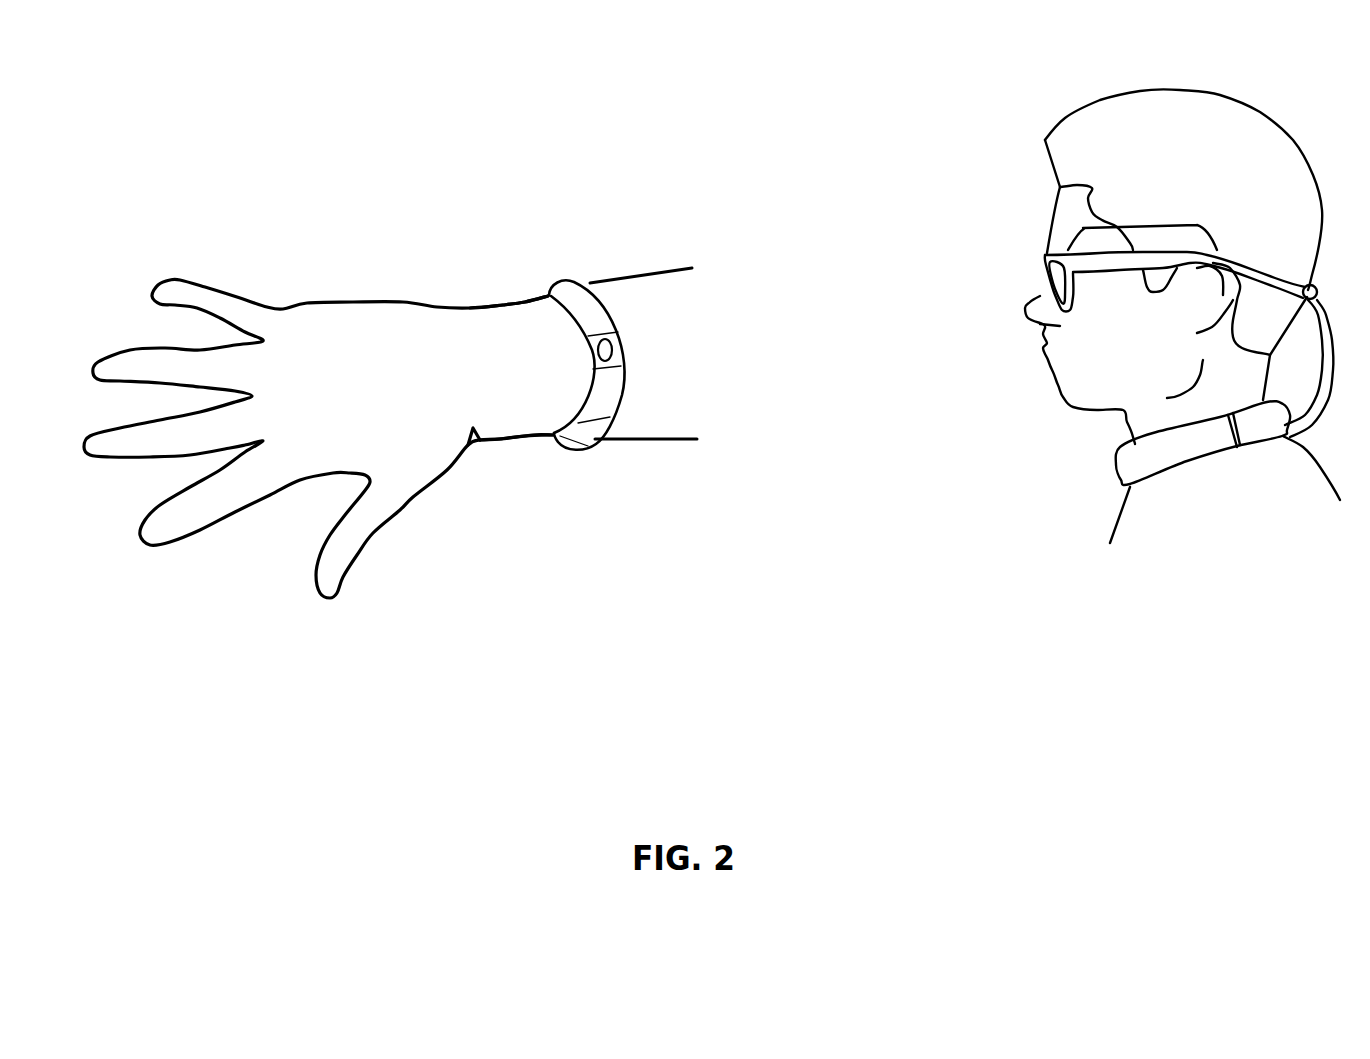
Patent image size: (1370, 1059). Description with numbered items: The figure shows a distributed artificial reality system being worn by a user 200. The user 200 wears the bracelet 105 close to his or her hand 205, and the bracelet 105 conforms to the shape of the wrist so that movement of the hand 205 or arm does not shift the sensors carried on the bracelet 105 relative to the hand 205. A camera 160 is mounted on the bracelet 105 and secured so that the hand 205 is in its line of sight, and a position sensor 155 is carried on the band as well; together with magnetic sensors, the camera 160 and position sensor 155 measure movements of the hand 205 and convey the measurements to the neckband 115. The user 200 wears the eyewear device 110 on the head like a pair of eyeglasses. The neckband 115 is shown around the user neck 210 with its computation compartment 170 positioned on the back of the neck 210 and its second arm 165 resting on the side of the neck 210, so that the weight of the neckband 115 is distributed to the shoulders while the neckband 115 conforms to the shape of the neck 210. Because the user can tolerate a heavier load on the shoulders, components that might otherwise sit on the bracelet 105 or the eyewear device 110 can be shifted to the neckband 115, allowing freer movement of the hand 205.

The bracelet 105 is at (568, 278).
The eyewear device 110 is at (1139, 227).
The neckband 115 is at (1095, 497).
The position sensor 155 is at (588, 445).
The camera 160 is at (623, 365).
The second arm 165 is at (1180, 460).
The computation compartment 170 is at (1255, 438).
The user 200 is at (1135, 517).
The hand 205 is at (178, 278).
The neck 210 is at (520, 305).